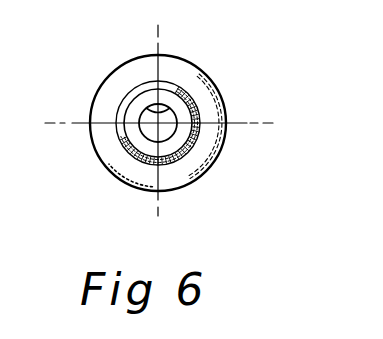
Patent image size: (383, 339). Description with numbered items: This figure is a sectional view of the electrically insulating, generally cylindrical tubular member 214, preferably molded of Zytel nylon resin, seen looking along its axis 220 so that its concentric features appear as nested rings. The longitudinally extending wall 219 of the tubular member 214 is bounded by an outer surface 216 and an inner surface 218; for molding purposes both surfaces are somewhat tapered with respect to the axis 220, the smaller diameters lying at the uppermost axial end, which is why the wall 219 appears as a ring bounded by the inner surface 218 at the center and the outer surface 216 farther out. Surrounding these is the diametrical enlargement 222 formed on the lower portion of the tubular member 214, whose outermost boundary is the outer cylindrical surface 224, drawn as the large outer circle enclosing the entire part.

The tubular member 214 is at (228, 179).
The outer surface 216 is at (177, 161).
The inner surface 218 is at (167, 108).
The longitudinally extending wall 219 is at (132, 135).
The axis 220 is at (159, 123).
The diametrical enlargement 222 is at (203, 88).
The outer cylindrical surface 224 is at (221, 146).